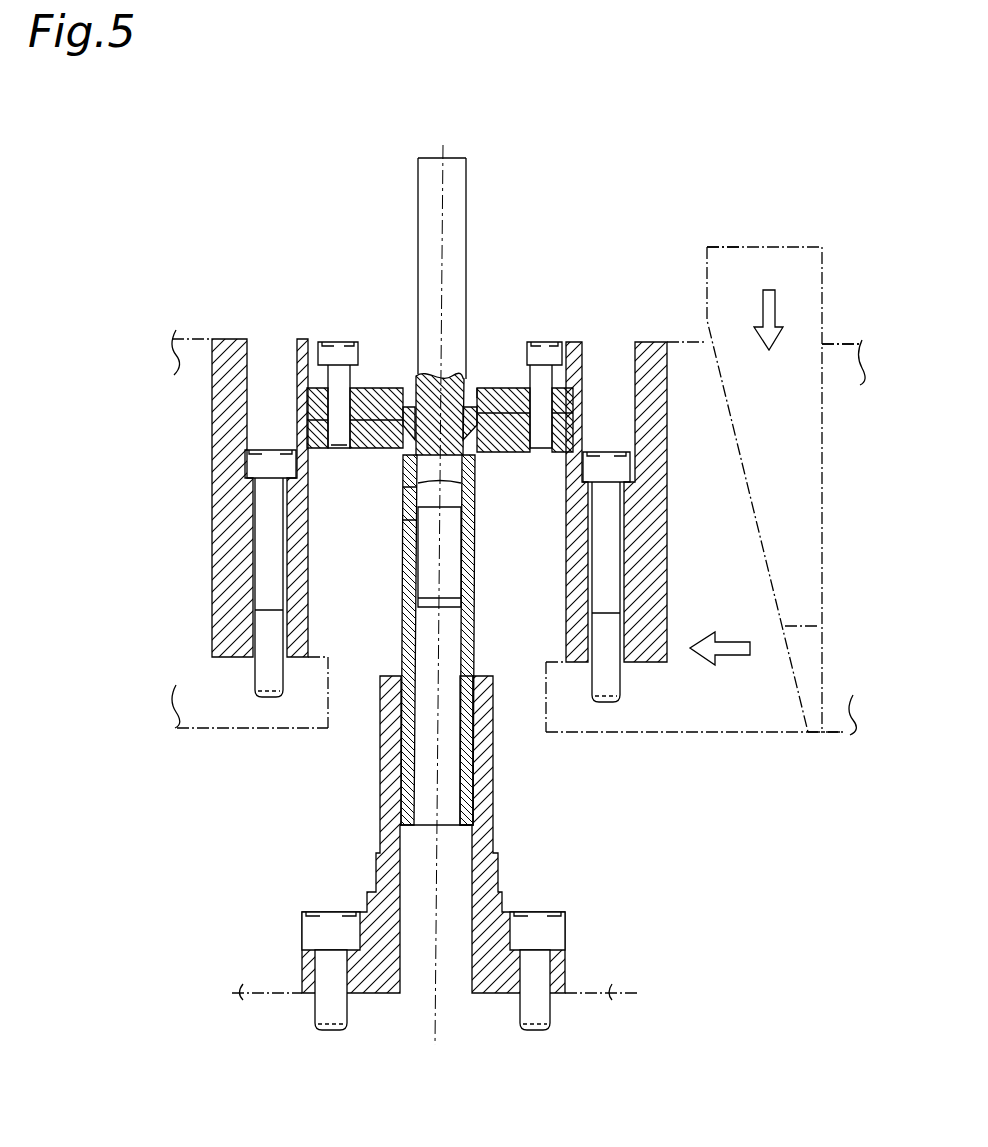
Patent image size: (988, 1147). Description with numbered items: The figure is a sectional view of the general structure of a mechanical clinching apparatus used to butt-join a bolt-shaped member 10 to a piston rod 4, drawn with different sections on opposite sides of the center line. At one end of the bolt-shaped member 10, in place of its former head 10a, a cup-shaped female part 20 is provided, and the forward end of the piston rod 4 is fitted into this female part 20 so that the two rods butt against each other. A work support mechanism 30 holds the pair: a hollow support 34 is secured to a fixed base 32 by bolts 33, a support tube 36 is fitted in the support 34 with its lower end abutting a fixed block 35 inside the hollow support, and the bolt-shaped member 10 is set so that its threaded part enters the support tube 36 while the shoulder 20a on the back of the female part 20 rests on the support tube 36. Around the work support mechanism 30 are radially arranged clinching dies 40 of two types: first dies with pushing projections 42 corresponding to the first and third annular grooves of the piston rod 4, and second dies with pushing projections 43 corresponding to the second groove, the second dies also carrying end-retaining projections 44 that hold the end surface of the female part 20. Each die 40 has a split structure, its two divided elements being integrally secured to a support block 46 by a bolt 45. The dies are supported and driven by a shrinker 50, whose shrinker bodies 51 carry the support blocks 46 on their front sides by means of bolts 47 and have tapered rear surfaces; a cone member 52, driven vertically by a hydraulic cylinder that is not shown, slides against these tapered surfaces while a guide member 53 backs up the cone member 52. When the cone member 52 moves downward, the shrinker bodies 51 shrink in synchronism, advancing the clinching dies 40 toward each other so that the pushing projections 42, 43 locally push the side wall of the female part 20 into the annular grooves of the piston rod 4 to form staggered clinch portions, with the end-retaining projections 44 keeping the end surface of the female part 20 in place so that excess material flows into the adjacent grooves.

The piston rod 4 is at (457, 198).
The bolt-shaped member 10 is at (411, 589).
The head 10a is at (455, 543).
The cup-shaped female part 20 is at (407, 395).
The shoulder 20a is at (401, 497).
The work support mechanism 30 is at (342, 856).
The fixed base 32 is at (608, 985).
The bolts 33 is at (540, 928).
The hollow support 34 is at (487, 806).
The fixed block 35 is at (410, 983).
The support tube 36 is at (468, 748).
The clinching dies 40 is at (527, 373).
The pushing projections 42 is at (399, 420).
The pushing projections 43 is at (478, 432).
The end-retaining projections 44 is at (475, 388).
The bolt 45 is at (318, 352).
The support block 46 is at (218, 452).
The bolts 47 is at (262, 553).
The shrinker 50 is at (207, 715).
The shrinker bodies 51 is at (748, 725).
The cone member 52 is at (733, 263).
The guide member 53 is at (838, 335).